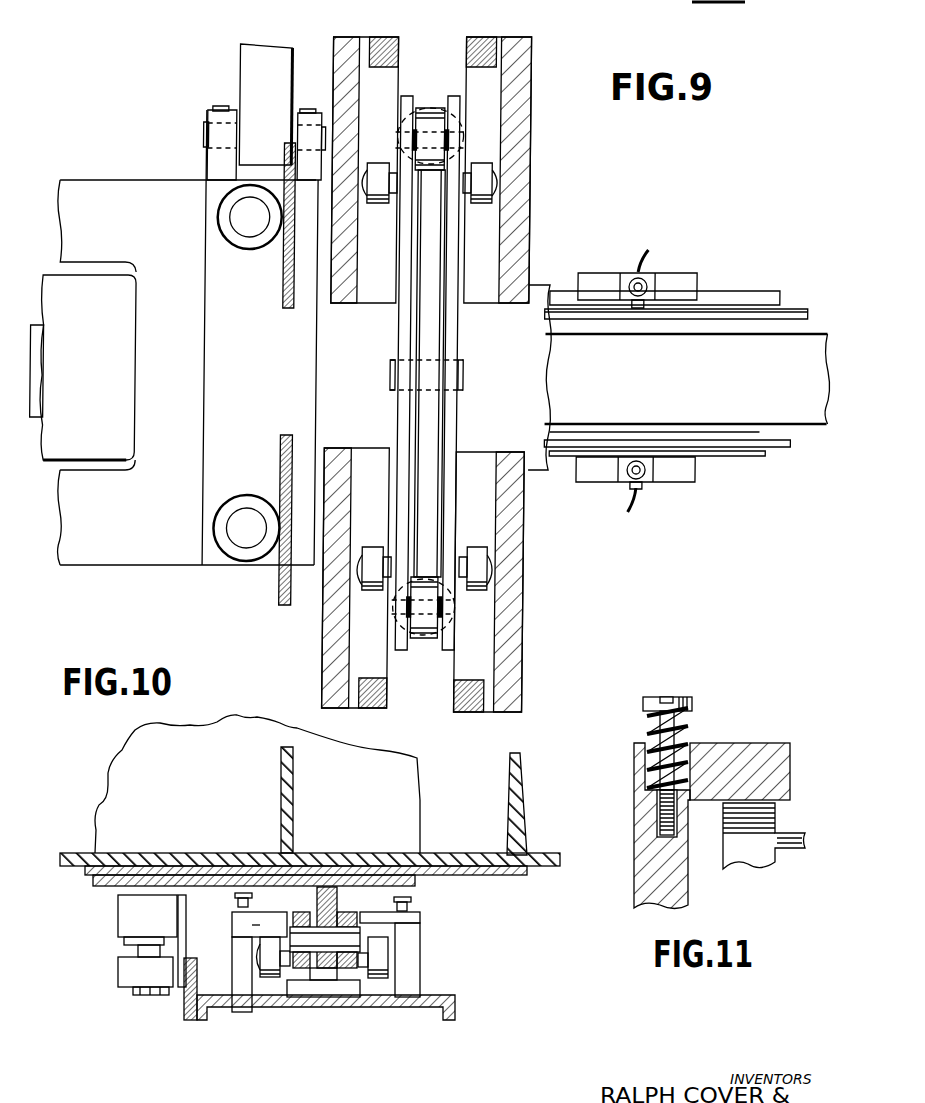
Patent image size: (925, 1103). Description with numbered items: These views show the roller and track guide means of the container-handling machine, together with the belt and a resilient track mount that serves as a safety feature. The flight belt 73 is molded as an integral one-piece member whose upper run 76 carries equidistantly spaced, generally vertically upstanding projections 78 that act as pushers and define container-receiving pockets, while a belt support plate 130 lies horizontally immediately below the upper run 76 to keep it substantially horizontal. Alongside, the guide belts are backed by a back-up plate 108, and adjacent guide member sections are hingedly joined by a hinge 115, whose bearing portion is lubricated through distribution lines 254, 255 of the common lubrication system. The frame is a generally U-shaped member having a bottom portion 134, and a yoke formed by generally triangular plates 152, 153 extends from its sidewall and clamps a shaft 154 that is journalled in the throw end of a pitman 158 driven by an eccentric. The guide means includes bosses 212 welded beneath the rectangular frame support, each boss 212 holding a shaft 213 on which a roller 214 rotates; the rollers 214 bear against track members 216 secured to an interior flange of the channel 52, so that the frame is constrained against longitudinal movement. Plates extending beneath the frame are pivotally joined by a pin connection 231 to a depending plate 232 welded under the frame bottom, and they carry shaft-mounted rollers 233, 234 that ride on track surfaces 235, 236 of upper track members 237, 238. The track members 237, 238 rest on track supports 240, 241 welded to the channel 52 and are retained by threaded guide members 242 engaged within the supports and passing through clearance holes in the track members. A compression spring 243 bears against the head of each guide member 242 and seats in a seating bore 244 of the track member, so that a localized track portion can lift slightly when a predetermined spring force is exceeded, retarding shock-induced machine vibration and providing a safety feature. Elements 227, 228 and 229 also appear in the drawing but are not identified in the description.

In FIG. 10, the channel 52 is at (455, 1010).
In FIG. 10, the flight belt 73 is at (80, 843).
In FIG. 9, the upper run 76 is at (696, 340).
In FIG. 10, the upper run 76 is at (184, 853).
In FIG. 10, the projections 78 is at (280, 770).
In FIG. 9, the back-up plate 108 is at (768, 292).
In FIG. 9, the hinge 115 is at (666, 282).
In FIG. 9, the belt support plate 130 is at (89, 311).
In FIG. 10, the belt support plate 130 is at (515, 878).
In FIG. 10, the bottom portion 134 is at (86, 878).
In FIG. 9, the plate 152 is at (211, 156).
In FIG. 9, the plate 153 is at (310, 110).
In FIG. 9, the shaft 154 is at (205, 130).
In FIG. 9, the pitman 158 is at (254, 58).
In FIG. 10, the boss 212 is at (120, 902).
In FIG. 9, the shaft 213 is at (235, 228).
In FIG. 10, the shaft 213 is at (142, 996).
In FIG. 9, the roller 214 is at (221, 200).
In FIG. 10, the roller 214 is at (118, 963).
In FIG. 9, the track member 216 is at (283, 283).
In FIG. 10, the track member 216 is at (183, 1000).
In FIG. 9, the pulley wheel 227 is at (459, 140).
In FIG. 9, the pulley 228 is at (432, 107).
In FIG. 10, the pulley 228 is at (318, 983).
In FIG. 10, the bracket 229 is at (347, 990).
In FIG. 9, the pin connection 231 is at (470, 372).
In FIG. 10, the pin connection 231 is at (387, 947).
In FIG. 9, the depending plate 232 is at (430, 428).
In FIG. 10, the depending plate 232 is at (347, 887).
In FIG. 9, the roller 233 is at (498, 198).
In FIG. 10, the roller 233 is at (381, 978).
In FIG. 9, the roller 234 is at (380, 170).
In FIG. 10, the roller 234 is at (268, 978).
In FIG. 11, the roller 234 is at (755, 862).
In FIG. 10, the track surface 235 is at (382, 938).
In FIG. 10, the track surface 236 is at (252, 932).
In FIG. 9, the upper track member 237 is at (491, 221).
In FIG. 10, the upper track member 237 is at (413, 920).
In FIG. 9, the upper track member 238 is at (404, 330).
In FIG. 10, the upper track member 238 is at (270, 917).
In FIG. 11, the upper track member 238 is at (767, 746).
In FIG. 9, the track support 240 is at (525, 146).
In FIG. 10, the track support 240 is at (413, 977).
In FIG. 9, the track support 241 is at (336, 46).
In FIG. 10, the track support 241 is at (237, 983).
In FIG. 11, the track support 241 is at (641, 838).
In FIG. 10, the threaded guide member 242 is at (415, 898).
In FIG. 11, the threaded guide member 242 is at (693, 698).
In FIG. 10, the compression spring 243 is at (234, 903).
In FIG. 11, the compression spring 243 is at (690, 737).
In FIG. 11, the seating bore 244 is at (648, 758).
In FIG. 9, the distribution line 254 is at (640, 258).
In FIG. 9, the distribution line 255 is at (398, 372).